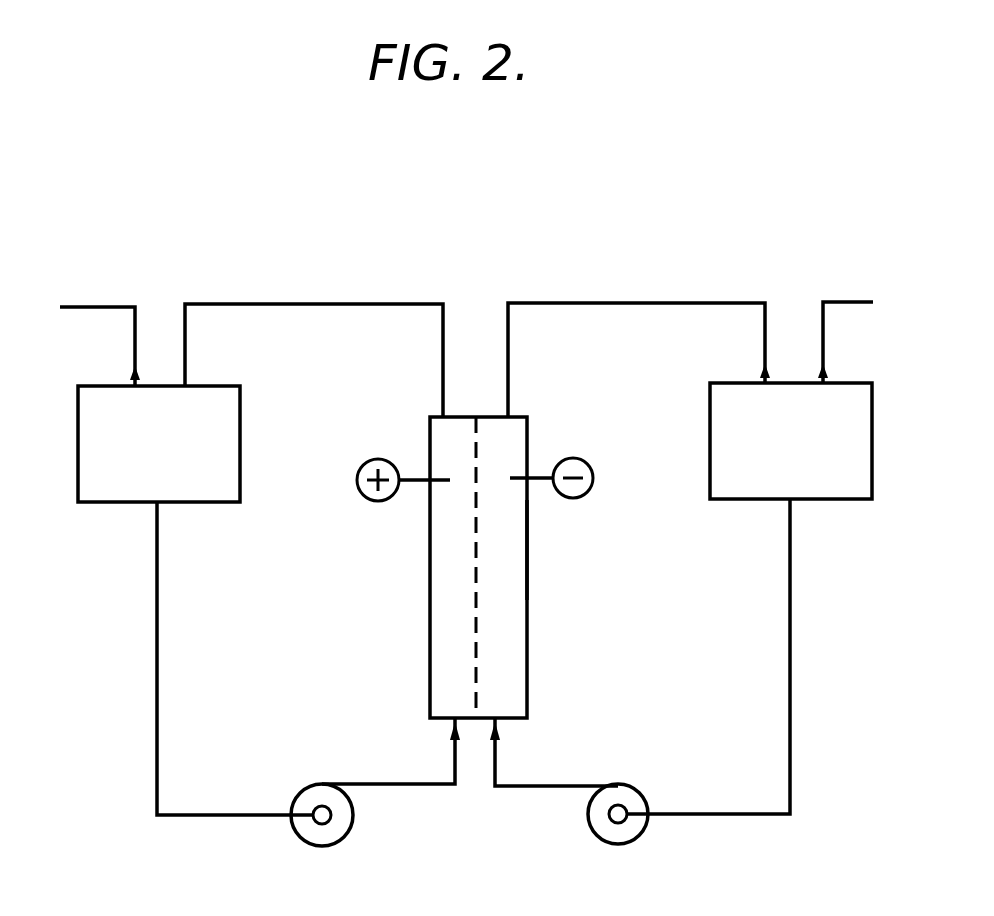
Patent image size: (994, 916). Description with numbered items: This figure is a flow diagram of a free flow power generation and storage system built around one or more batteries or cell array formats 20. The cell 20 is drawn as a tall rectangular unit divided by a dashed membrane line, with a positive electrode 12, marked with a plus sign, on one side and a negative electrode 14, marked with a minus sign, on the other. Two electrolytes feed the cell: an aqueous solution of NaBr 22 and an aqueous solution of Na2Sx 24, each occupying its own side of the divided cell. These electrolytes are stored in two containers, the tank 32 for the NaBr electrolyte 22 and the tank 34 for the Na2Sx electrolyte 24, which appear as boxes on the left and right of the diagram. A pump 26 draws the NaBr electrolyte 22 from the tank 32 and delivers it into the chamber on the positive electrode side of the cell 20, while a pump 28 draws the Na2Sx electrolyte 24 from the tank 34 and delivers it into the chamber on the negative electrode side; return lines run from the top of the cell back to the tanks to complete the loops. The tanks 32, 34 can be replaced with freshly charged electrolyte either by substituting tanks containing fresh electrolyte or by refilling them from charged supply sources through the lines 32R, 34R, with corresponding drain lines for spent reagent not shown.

The positive electrode 12 is at (418, 473).
The negative electrode 14 is at (538, 478).
The cell 20 is at (530, 628).
The aqueous solution of NaBr 22 is at (438, 597).
The aqueous solution of Na2Sx 24 is at (510, 548).
The pump 26 is at (305, 793).
The pump 28 is at (632, 797).
The container 32 is at (160, 462).
The line 32R is at (84, 307).
The container 34 is at (795, 460).
The line 34R is at (850, 300).